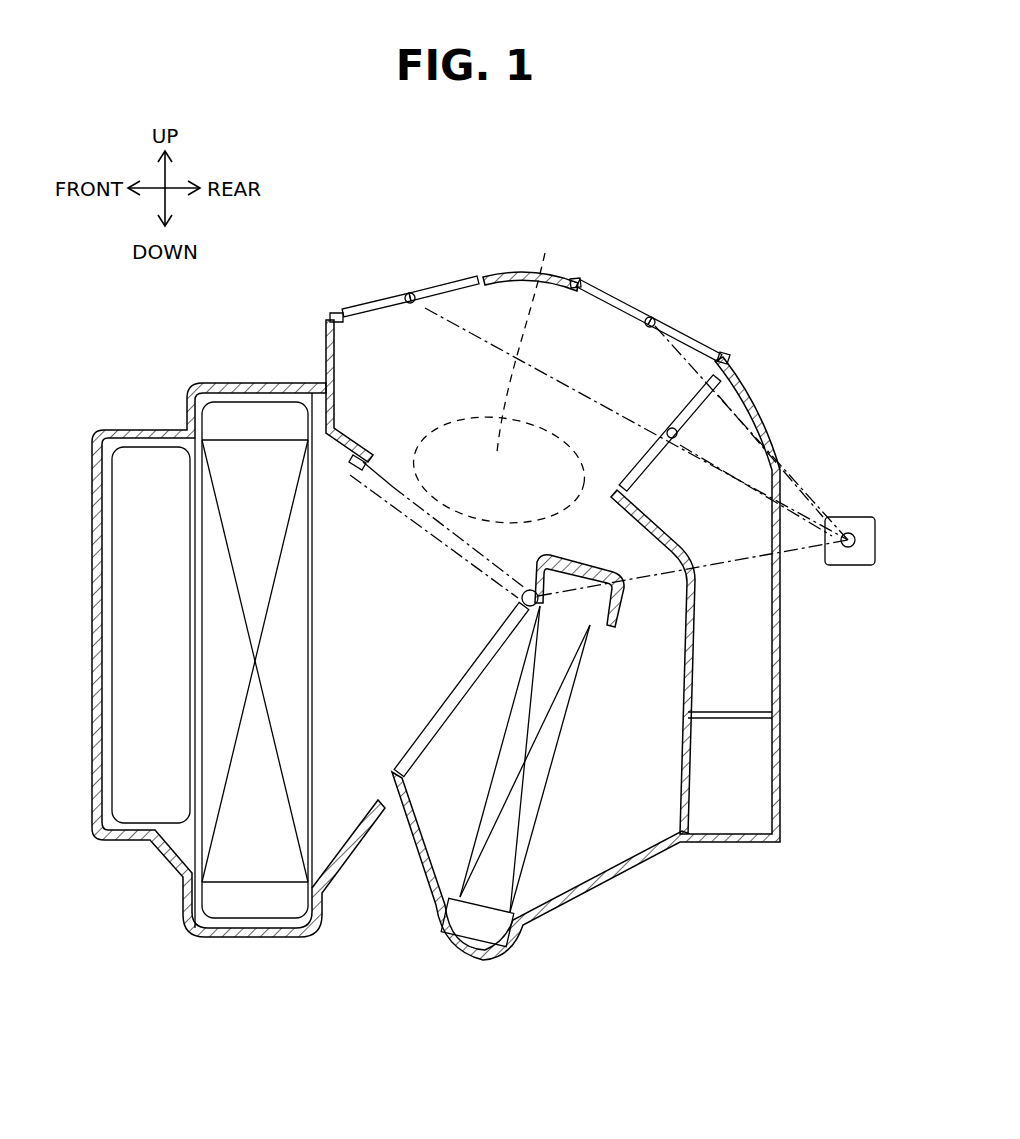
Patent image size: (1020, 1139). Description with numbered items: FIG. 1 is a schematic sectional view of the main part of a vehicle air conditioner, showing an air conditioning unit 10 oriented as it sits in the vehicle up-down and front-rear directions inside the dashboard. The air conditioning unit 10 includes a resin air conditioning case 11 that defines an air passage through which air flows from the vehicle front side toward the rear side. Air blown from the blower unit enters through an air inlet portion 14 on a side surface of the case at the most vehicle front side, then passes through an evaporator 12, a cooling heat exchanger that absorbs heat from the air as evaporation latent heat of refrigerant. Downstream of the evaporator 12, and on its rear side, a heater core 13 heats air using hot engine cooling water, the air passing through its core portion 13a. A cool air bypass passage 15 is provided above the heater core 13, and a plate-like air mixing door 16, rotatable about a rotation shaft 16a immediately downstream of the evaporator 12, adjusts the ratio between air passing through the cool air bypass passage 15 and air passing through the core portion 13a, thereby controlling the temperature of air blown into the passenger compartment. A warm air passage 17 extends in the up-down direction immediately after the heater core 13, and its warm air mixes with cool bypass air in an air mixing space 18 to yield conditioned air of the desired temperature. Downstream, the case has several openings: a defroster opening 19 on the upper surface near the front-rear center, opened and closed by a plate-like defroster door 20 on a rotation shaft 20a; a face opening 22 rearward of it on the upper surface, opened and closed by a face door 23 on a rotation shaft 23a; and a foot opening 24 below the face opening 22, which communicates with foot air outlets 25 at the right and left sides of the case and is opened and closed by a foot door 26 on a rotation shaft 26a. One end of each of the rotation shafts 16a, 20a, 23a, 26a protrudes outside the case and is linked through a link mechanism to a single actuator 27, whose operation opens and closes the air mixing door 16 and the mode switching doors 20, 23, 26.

The air conditioning unit 10 is at (282, 368).
The air conditioning case 11 is at (235, 383).
The evaporator 12 is at (250, 850).
The heater core 13 is at (530, 815).
The core portion 13a is at (537, 762).
The air inlet portion 14 is at (108, 765).
The cool air bypass passage 15 is at (398, 480).
The air mixing door 16 is at (430, 755).
The rotation shaft 16a is at (575, 635).
The warm air passage 17 is at (623, 693).
The air mixing space 18 is at (499, 379).
The defroster opening 19 is at (372, 298).
The defroster door 20 is at (452, 287).
The rotation shaft 20a is at (410, 293).
The face opening 22 is at (642, 306).
The face door 23 is at (693, 340).
The rotation shaft 23a is at (657, 322).
The foot opening 24 is at (657, 470).
The foot air outlets 25 is at (732, 785).
The foot door 26 is at (690, 412).
The rotation shaft 26a is at (677, 437).
The actuator 27 is at (843, 570).